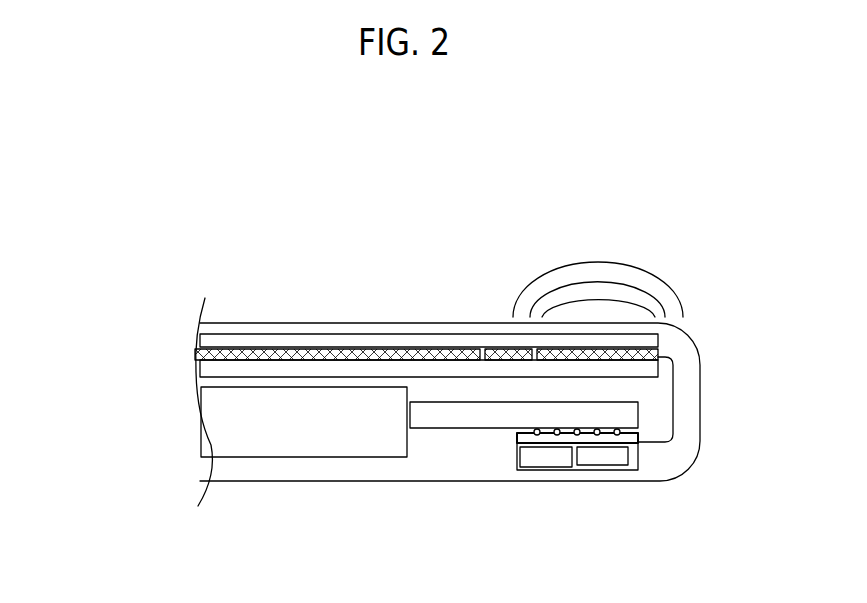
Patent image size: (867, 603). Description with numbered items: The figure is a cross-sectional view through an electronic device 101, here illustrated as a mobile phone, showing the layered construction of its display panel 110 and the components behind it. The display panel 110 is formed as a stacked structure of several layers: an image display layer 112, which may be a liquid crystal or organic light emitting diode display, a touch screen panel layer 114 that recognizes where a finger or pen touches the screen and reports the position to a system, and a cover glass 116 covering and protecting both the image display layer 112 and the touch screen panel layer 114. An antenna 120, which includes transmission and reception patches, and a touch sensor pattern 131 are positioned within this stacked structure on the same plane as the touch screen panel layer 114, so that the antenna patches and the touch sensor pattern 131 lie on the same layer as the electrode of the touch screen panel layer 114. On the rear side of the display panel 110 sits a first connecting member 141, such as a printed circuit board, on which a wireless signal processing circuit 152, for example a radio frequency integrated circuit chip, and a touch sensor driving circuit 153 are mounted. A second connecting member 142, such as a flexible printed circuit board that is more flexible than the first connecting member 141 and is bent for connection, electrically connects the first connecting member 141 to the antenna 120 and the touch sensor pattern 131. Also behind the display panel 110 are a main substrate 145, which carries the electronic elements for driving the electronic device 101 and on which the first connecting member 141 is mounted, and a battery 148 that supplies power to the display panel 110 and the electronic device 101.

The electronic device 101 is at (461, 245).
The display panel 110 is at (369, 344).
The image display layer 112 is at (394, 389).
The touch screen panel layer 114 is at (394, 328).
The cover glass 116 is at (197, 340).
The antenna 120 is at (583, 350).
The touch sensor pattern 131 is at (502, 350).
The first connecting member 141 is at (561, 481).
The second connecting member 142 is at (677, 399).
The main substrate 145 is at (437, 430).
The battery 148 is at (337, 458).
The wireless signal processing circuit 152 is at (602, 467).
The touch sensor driving circuit 153 is at (545, 468).